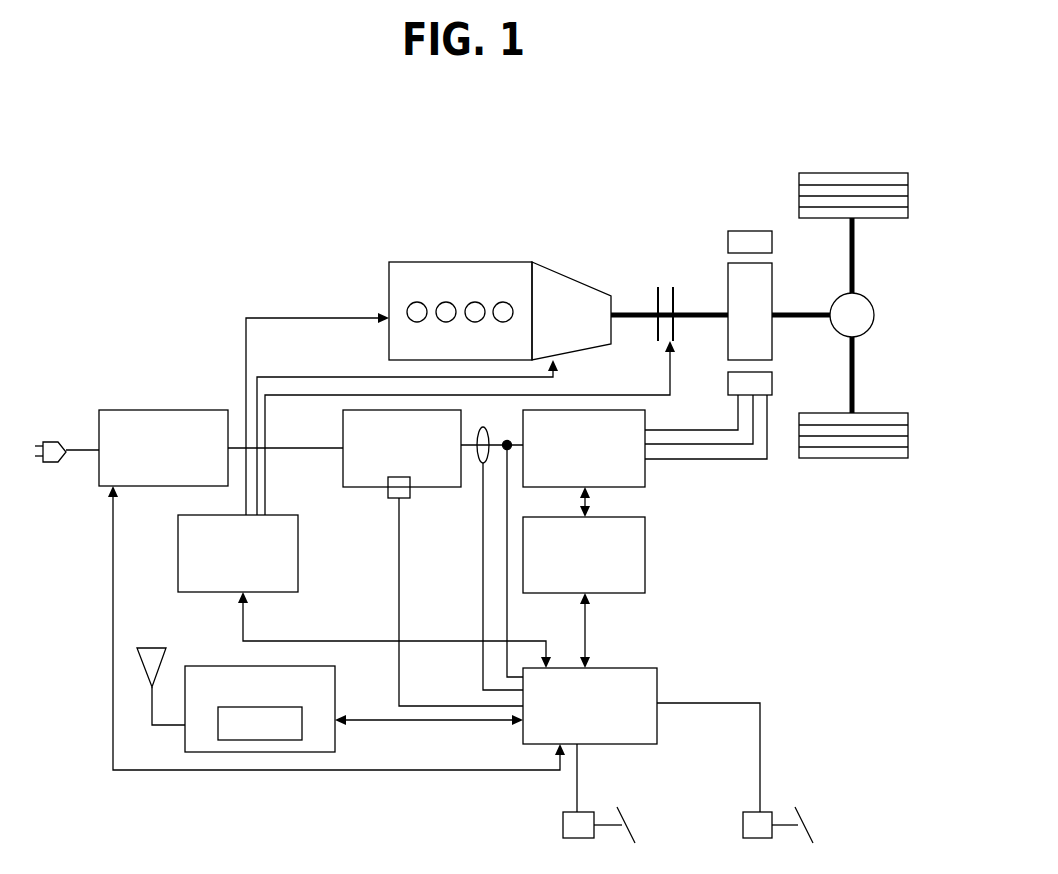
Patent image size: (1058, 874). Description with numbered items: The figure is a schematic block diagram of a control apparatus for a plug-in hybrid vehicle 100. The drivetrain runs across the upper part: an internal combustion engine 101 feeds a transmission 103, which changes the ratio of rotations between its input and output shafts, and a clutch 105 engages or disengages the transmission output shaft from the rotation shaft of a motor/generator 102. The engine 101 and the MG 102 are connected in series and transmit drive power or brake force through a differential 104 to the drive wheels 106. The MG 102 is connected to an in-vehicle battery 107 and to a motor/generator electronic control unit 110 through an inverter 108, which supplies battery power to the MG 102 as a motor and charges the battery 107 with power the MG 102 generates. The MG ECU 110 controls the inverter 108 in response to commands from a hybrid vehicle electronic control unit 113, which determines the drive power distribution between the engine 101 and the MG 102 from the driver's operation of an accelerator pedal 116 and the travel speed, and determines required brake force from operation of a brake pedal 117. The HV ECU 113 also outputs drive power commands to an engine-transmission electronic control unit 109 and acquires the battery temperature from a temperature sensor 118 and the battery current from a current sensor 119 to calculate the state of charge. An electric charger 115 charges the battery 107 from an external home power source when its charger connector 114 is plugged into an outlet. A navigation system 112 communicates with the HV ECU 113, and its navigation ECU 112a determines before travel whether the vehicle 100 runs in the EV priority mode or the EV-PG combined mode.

The plug-in hybrid vehicle 100 is at (298, 265).
The internal combustion engine 101 is at (412, 268).
The motor/generator 102 is at (750, 237).
The transmission 103 is at (556, 272).
The differential 104 is at (875, 305).
The clutch 105 is at (665, 288).
The drive wheels 106 is at (856, 180).
The in-vehicle battery 107 is at (343, 462).
The inverter 108 is at (645, 478).
The engine-transmission electronic control unit 109 is at (178, 547).
The motor/generator electronic control unit 110 is at (645, 548).
The navigation system 112 is at (300, 668).
The navigation electronic control unit 112a is at (302, 728).
The hybrid vehicle electronic control unit 113 is at (628, 668).
The charger connector 114 is at (58, 440).
The electric charger 115 is at (172, 408).
The accelerator pedal 116 is at (585, 812).
The brake pedal 117 is at (770, 812).
The temperature sensor 118 is at (393, 500).
The current sensor 119 is at (480, 464).